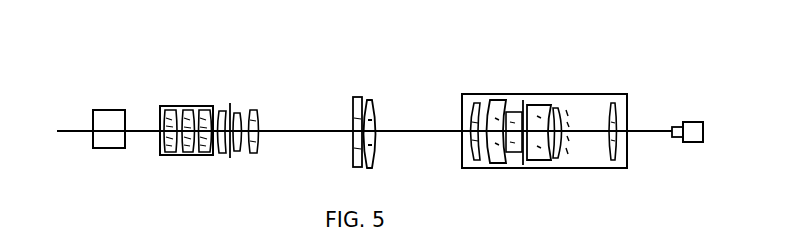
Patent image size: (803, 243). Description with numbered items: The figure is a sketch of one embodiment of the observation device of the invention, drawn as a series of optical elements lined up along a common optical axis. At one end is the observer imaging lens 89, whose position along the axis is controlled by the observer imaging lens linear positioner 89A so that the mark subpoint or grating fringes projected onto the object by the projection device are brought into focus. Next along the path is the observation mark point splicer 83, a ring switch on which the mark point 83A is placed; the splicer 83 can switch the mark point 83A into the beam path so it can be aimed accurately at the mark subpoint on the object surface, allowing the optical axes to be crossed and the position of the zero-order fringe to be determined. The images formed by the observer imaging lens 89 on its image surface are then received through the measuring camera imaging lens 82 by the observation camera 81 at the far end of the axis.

The observation camera 81 is at (690, 86).
The camera imaging lens 82 is at (544, 99).
The observation mark point splicer 83 is at (387, 99).
The mark point 83A is at (422, 99).
The observer imaging lens 89 is at (189, 94).
The observer imaging lens linear positioner 89A is at (85, 89).